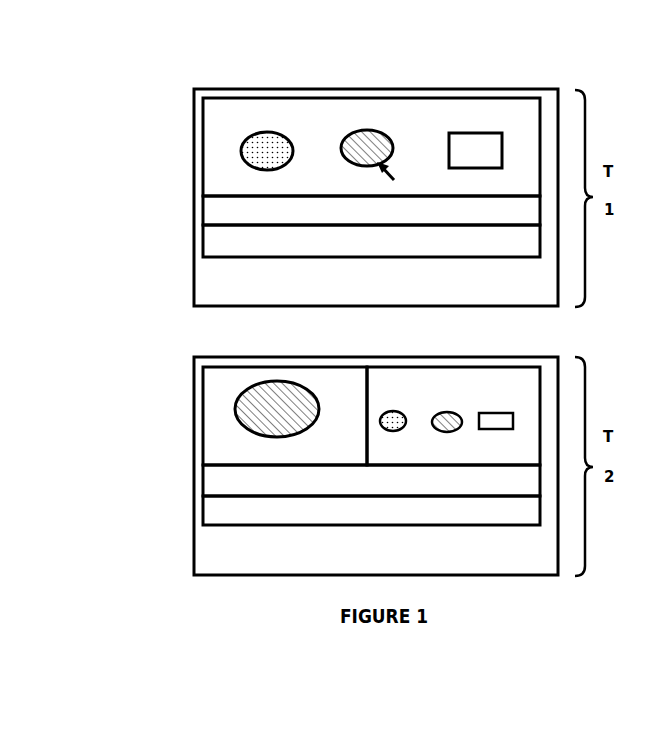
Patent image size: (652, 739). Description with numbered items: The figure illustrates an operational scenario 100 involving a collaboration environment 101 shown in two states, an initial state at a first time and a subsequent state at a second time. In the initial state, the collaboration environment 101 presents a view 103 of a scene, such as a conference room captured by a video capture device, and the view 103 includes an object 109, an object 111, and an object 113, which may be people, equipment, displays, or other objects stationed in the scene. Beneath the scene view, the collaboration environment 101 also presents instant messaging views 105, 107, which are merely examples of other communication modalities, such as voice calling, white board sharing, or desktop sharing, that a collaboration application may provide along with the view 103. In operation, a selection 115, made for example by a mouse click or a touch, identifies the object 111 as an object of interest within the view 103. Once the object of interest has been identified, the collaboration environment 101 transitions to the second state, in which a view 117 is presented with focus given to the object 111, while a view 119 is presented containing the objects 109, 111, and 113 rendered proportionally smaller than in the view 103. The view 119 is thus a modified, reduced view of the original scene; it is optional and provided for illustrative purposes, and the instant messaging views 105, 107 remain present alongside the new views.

The operational scenario 100 is at (170, 69).
The collaboration environment 101 is at (545, 290).
The view 103 is at (249, 190).
The instant messaging view 105 is at (249, 222).
The instant messaging view 107 is at (249, 252).
The object 109 is at (285, 135).
The object 111 is at (386, 135).
The object 113 is at (490, 130).
The selection 115 is at (394, 180).
The view 117 is at (240, 459).
The view 119 is at (401, 456).